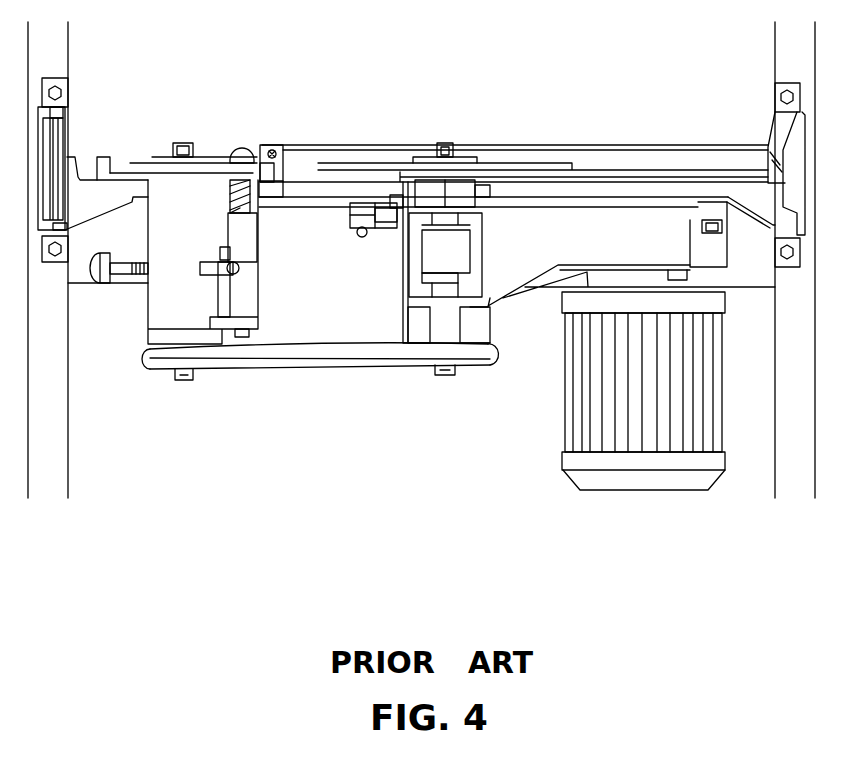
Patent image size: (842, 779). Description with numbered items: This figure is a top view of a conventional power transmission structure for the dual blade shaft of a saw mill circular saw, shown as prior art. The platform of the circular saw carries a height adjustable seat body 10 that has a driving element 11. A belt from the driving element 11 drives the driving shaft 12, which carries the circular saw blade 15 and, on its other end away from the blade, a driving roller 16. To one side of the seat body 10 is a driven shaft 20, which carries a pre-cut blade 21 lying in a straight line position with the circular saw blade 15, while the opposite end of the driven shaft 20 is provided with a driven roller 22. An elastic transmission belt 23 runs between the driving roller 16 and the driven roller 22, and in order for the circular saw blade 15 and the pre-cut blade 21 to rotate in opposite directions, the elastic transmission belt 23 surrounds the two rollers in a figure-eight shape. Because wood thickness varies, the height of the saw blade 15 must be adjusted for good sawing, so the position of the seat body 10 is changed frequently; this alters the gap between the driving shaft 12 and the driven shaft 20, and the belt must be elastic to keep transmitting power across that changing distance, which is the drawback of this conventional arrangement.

The seat body 10 is at (641, 227).
The driving element 11 is at (568, 435).
The driving shaft 12 is at (443, 288).
The circular saw blade 15 is at (377, 160).
The driving roller 16 is at (423, 373).
The driven shaft 20 is at (163, 293).
The pre-cut blade 21 is at (208, 163).
The driven roller 22 is at (209, 372).
The elastic transmission belt 23 is at (320, 367).